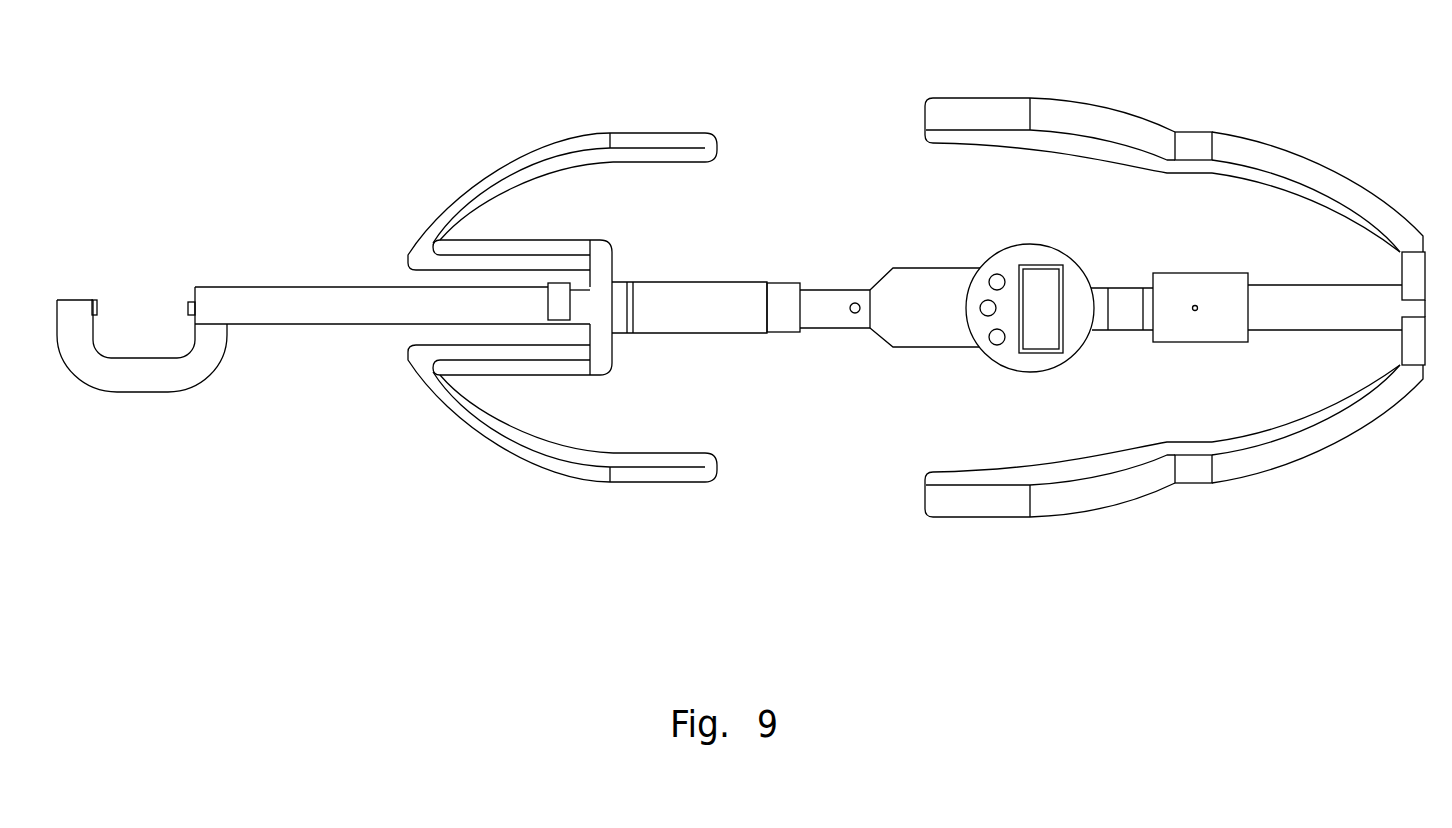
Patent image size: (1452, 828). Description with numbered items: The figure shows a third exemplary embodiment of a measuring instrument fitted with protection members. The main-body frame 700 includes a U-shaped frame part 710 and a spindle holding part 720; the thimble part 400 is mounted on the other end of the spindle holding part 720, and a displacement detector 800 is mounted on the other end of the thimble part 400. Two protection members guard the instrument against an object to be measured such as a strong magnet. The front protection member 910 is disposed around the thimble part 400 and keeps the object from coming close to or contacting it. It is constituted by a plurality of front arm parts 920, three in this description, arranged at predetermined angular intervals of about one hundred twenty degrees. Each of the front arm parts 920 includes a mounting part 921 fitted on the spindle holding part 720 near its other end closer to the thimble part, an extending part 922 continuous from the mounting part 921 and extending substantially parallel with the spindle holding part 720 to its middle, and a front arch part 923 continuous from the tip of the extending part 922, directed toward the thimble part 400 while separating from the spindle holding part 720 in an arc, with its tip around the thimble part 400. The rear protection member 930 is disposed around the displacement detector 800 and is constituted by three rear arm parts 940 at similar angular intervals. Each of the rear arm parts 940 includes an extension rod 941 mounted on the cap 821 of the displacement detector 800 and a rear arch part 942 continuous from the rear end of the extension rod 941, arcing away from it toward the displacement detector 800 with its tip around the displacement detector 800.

The thimble part 400 is at (723, 328).
The main-body frame 700 is at (323, 367).
The U-shaped frame part 710 is at (176, 393).
The spindle holding part 720 is at (253, 358).
The displacement detector 800 is at (1011, 299).
The cap 821 is at (1117, 332).
The front protection member 910 is at (562, 262).
The front arm parts 920 is at (650, 135).
The mounting part 921 is at (612, 280).
The extending part 922 is at (560, 239).
The front arch part 923 is at (503, 158).
The rear protection member 930 is at (1175, 259).
The rear arm parts 940 is at (973, 112).
The extension rod 941 is at (1213, 342).
The rear arch part 942 is at (1290, 148).